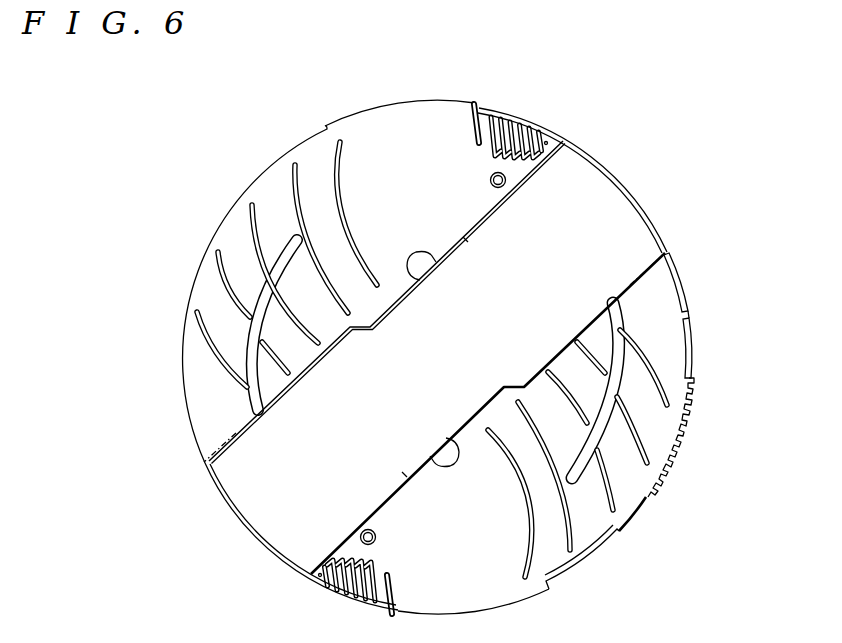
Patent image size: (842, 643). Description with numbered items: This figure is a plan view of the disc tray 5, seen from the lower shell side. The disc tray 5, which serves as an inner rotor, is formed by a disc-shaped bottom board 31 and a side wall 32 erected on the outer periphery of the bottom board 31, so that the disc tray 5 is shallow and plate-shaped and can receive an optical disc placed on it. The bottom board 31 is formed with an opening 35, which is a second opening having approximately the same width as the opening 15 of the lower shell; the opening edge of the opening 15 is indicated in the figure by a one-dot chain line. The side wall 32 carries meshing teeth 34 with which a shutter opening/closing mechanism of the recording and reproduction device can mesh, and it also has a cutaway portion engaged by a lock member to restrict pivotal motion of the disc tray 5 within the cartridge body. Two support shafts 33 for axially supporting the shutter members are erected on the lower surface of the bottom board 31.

The disc tray 5 is at (284, 97).
The opening of the lower shell 15 is at (447, 349).
The bottom board 31 is at (203, 352).
The side wall 32 is at (241, 527).
The support shafts 33 is at (491, 176).
The meshing teeth 34 is at (675, 472).
The opening 35 is at (582, 203).